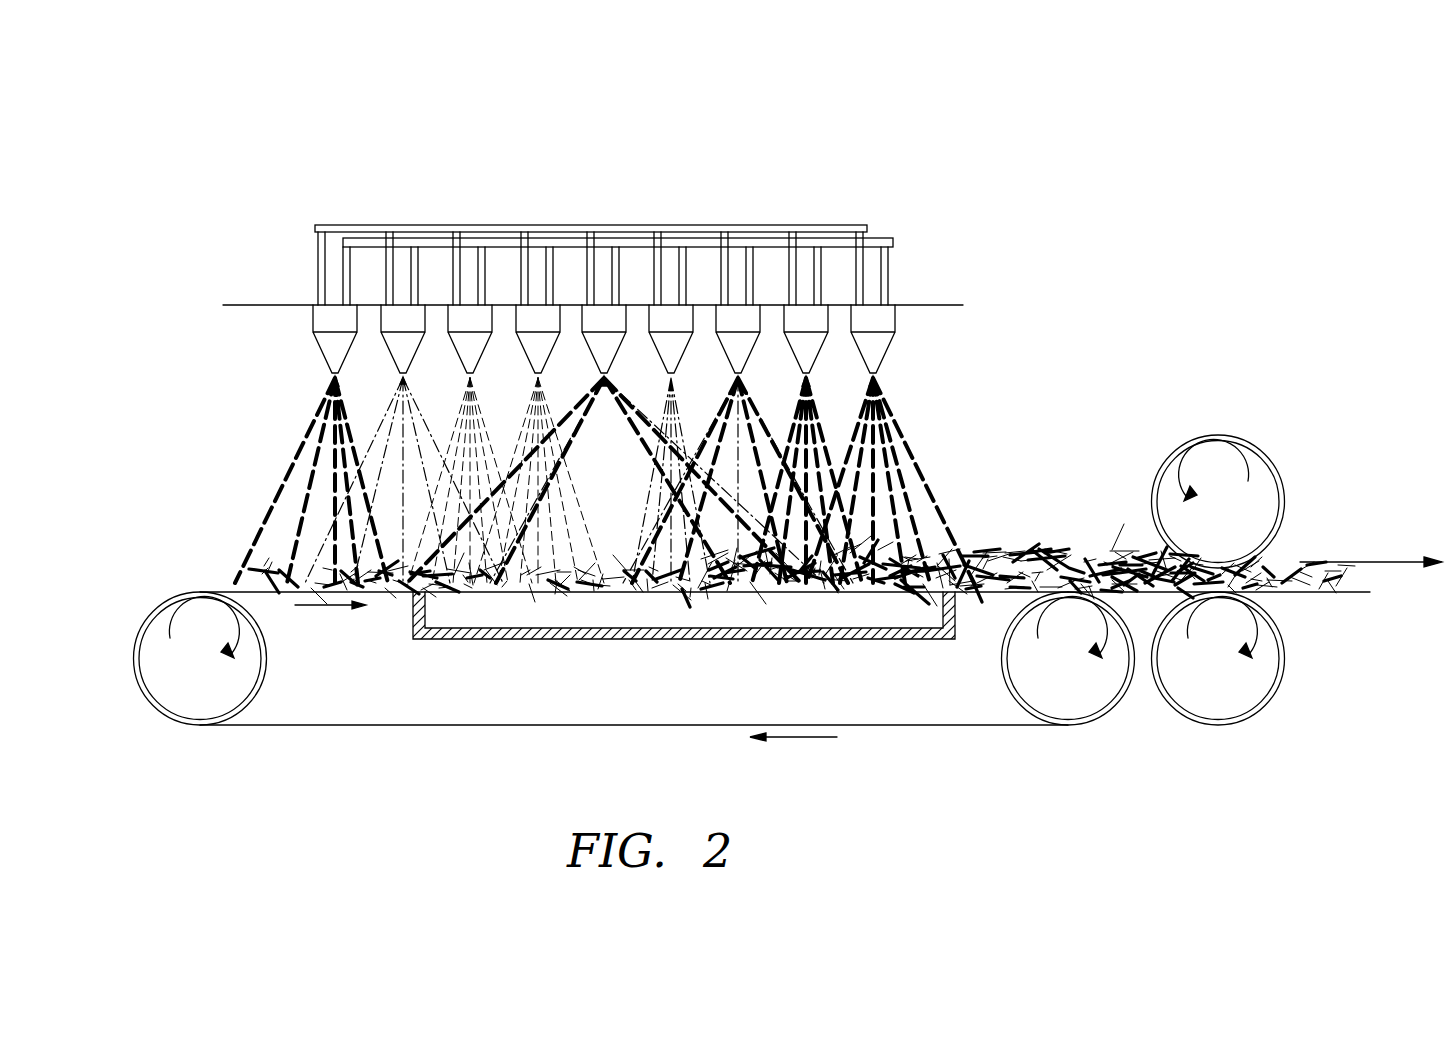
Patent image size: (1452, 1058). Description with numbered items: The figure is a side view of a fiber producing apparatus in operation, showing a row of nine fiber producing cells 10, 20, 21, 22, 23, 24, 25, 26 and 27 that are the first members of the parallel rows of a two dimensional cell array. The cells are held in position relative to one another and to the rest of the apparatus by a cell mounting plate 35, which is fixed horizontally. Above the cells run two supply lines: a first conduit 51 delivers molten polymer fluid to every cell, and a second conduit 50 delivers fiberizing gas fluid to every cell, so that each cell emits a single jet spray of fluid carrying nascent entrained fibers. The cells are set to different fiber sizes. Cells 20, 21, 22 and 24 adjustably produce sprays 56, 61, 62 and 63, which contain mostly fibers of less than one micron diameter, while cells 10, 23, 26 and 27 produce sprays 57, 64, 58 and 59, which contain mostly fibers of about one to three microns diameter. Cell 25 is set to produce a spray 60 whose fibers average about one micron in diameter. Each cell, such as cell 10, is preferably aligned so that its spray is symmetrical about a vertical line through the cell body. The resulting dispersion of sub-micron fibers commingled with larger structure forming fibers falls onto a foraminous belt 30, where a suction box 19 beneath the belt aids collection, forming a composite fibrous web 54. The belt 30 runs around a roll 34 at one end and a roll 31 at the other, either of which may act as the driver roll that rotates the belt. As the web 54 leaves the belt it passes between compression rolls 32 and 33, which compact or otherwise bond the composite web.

The fiber producing cell 10 is at (328, 318).
The suction box 19 is at (642, 612).
The fiber producing cell 20 is at (398, 318).
The fiber producing cell 21 is at (465, 318).
The fiber producing cell 22 is at (533, 318).
The fiber producing cell 23 is at (599, 318).
The fiber producing cell 24 is at (666, 318).
The fiber producing cell 25 is at (733, 318).
The fiber producing cell 26 is at (801, 318).
The fiber producing cell 27 is at (868, 318).
The foraminous belt 30 is at (427, 726).
The roll 31 is at (1078, 697).
The compression roll 32 is at (1218, 457).
The compression roll 33 is at (1218, 702).
The roll 34 is at (190, 695).
The cell mounting plate 35 is at (260, 307).
The second conduit 50 is at (315, 228).
The first conduit 51 is at (893, 243).
The composite fibrous web 54 is at (1048, 555).
The spray 56 is at (403, 420).
The spray 57 is at (277, 497).
The spray 58 is at (827, 413).
The spray 59 is at (907, 440).
The fiber stream 60 is at (760, 410).
The spray 61 is at (470, 440).
The spray 62 is at (538, 440).
The spray 63 is at (690, 423).
The spray 64 is at (628, 427).